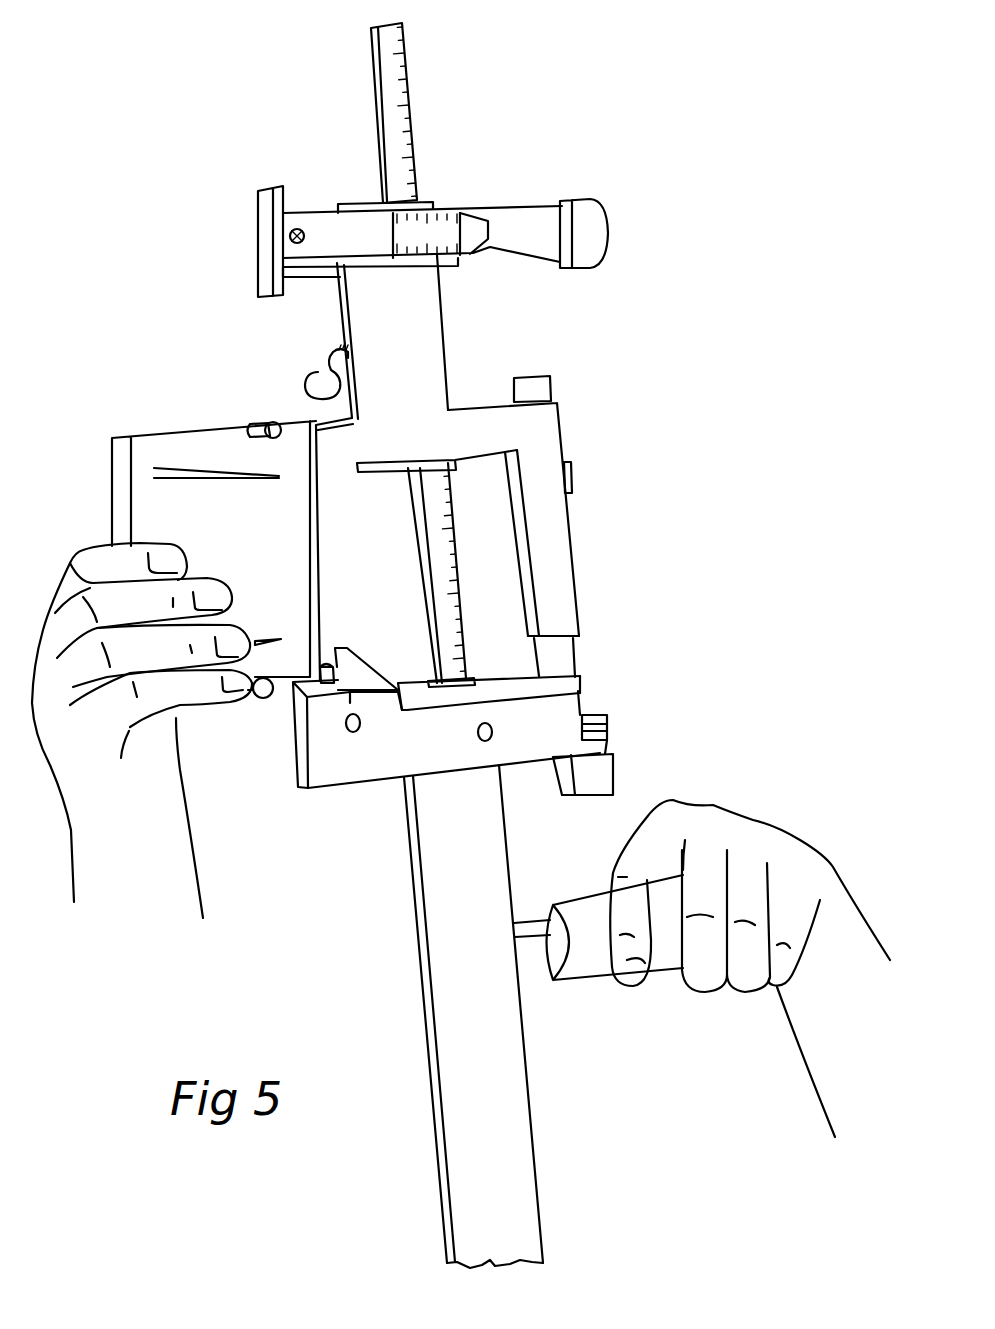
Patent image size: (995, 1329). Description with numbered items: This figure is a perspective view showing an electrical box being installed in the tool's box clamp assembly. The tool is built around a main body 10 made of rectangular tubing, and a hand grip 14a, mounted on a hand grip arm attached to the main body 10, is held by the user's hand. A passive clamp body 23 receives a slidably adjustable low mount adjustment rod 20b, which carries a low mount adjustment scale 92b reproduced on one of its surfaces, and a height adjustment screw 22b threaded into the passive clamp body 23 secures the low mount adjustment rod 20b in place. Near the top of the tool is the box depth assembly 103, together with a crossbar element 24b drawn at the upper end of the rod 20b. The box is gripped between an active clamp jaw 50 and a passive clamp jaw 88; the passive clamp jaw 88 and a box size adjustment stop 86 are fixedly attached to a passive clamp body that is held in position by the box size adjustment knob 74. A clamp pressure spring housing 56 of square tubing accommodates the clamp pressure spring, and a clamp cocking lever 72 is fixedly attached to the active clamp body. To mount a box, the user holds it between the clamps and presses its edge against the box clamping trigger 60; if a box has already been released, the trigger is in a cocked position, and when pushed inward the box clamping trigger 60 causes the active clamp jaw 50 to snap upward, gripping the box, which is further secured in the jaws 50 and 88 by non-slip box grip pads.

The main body 10 is at (515, 1170).
The hand grip 14a is at (597, 973).
The low mount adjustment rod 20b is at (434, 345).
The height adjustment screw 22b is at (320, 380).
The passive clamp body 23 is at (402, 320).
The handle bar 24b is at (583, 204).
The active clamp jaw 50 is at (333, 665).
The clamp pressure spring housing 56 is at (596, 776).
The box clamping trigger 60 is at (322, 662).
The clamp cocking lever 72 is at (589, 713).
The box size adjustment knob 74 is at (538, 383).
The box size adjustment stop 86 is at (572, 476).
The passive clamp jaw 88 is at (305, 428).
The low mount adjustment scale 92b is at (407, 100).
The box depth assembly 103 is at (273, 188).